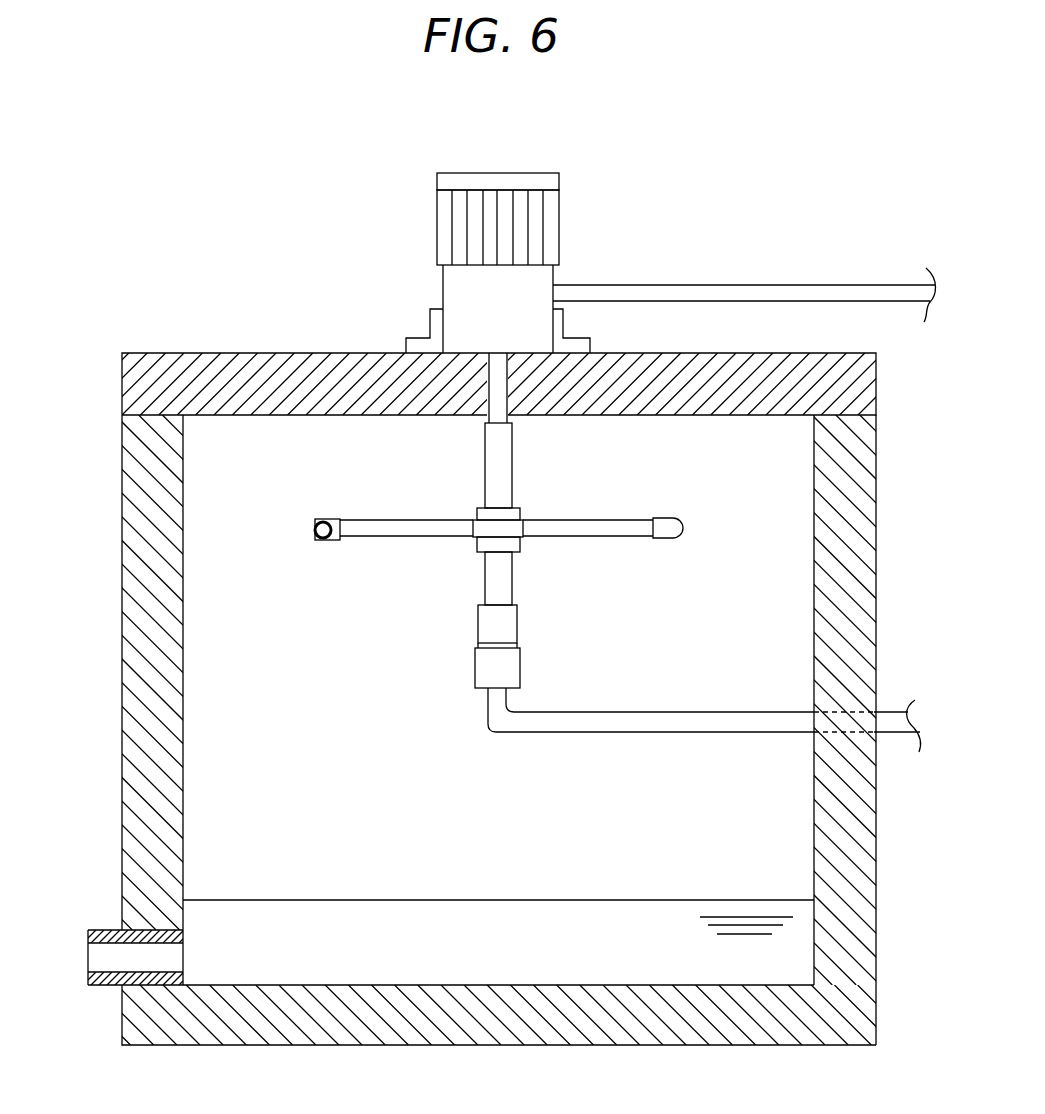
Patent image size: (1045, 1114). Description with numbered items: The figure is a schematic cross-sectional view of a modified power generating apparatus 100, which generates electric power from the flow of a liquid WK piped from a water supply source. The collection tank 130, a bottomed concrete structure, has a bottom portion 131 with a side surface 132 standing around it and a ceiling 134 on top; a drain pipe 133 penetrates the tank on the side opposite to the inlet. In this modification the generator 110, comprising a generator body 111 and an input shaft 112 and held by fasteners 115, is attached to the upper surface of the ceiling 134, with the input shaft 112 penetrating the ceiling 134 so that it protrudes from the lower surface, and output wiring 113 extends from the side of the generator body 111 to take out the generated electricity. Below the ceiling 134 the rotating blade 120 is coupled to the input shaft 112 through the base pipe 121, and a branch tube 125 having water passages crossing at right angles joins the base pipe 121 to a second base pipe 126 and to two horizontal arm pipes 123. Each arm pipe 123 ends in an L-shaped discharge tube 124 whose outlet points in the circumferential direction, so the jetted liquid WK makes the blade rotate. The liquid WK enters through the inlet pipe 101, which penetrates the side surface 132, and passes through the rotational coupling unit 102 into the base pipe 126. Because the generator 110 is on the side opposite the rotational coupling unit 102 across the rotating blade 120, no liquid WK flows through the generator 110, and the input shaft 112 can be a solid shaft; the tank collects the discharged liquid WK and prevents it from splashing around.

The power generating apparatus 100 is at (175, 173).
The inlet pipe 101 is at (630, 712).
The rotational coupling unit 102 is at (478, 638).
The generator 110 is at (443, 173).
The generator body 111 is at (437, 239).
The input shaft 112 is at (509, 418).
The output wiring 113 is at (877, 283).
The fastener 115 is at (430, 317).
The rotating blade 120 is at (322, 520).
The base pipe 121 is at (485, 447).
The arm pipe 123 is at (392, 518).
The discharge tube 124 is at (330, 542).
The branch tube 125 is at (475, 538).
The base pipe 126 is at (512, 577).
The collection tank 130 is at (122, 352).
The bottom portion 131 is at (436, 985).
The side surface 132 is at (813, 812).
The drain pipe 133 is at (88, 930).
The ceiling 134 is at (218, 353).
The liquid WK is at (600, 900).